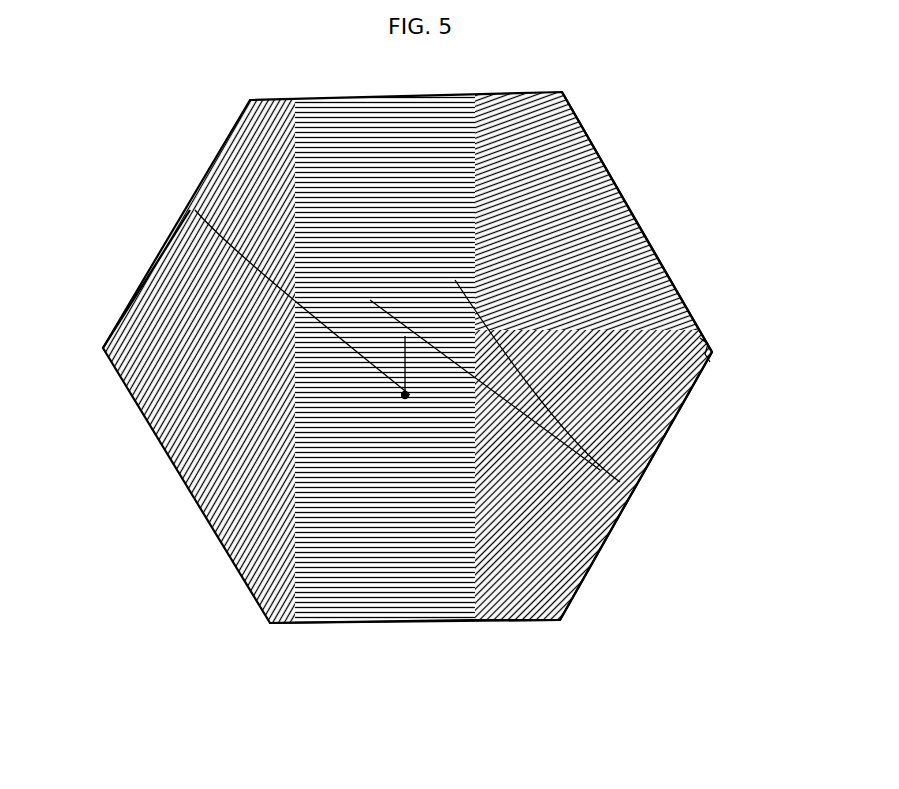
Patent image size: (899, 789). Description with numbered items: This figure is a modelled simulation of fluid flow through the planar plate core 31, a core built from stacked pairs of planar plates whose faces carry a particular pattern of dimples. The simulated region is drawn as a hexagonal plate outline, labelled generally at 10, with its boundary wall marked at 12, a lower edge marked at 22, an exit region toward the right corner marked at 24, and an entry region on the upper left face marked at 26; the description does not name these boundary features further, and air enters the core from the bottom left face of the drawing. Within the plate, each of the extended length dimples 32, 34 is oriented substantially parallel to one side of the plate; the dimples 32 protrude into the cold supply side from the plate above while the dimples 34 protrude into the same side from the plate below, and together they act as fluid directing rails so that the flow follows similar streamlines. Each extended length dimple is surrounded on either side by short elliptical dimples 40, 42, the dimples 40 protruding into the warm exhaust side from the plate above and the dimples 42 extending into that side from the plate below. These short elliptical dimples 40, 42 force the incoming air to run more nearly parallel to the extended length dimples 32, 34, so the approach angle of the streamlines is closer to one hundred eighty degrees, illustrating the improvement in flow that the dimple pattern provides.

The hexagonal mixing chamber 10 is at (160, 455).
The chamber wall 12 is at (620, 536).
The bottom wall 22 is at (490, 598).
The outlet 24 is at (655, 250).
The inlet 26 is at (172, 222).
The planar plate core 31 is at (390, 625).
The extended length dimple 32 is at (525, 208).
The extended length dimple 34 is at (195, 210).
The short elliptical dimple 40 is at (600, 470).
The short elliptical dimple 42 is at (620, 482).